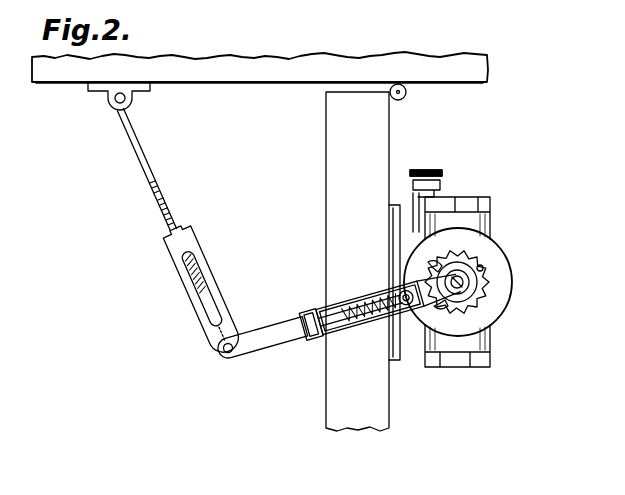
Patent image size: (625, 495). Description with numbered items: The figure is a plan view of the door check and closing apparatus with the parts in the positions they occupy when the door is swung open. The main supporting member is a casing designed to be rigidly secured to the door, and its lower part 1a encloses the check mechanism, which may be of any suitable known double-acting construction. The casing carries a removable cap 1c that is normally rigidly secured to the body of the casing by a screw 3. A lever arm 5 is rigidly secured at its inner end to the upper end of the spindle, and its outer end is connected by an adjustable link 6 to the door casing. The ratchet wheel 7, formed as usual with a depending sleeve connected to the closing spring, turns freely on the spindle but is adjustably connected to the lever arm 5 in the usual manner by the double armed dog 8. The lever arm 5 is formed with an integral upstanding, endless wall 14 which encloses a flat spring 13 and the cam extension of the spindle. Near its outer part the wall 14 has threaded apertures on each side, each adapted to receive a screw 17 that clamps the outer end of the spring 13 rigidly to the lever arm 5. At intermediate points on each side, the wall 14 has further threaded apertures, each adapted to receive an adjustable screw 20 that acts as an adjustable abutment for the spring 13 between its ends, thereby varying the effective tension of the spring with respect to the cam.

The lower part of the casing 1a is at (493, 342).
The removable cap 1c is at (512, 285).
The screw 3 is at (284, 326).
The lever arm 5 is at (262, 344).
The adjustable link 6 is at (192, 236).
The ratchet wheel 7 is at (458, 260).
The double armed dog 8 is at (434, 264).
The flat spring 13 is at (373, 292).
The upstanding wall 14 is at (372, 330).
The screw 17 is at (315, 337).
The adjustable screw 20 is at (356, 305).